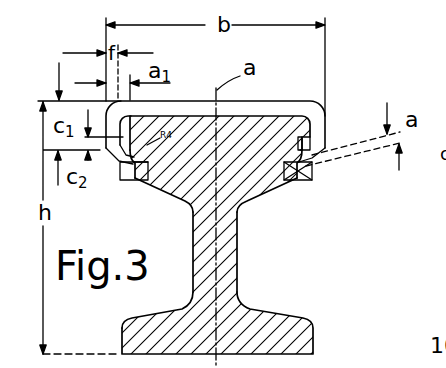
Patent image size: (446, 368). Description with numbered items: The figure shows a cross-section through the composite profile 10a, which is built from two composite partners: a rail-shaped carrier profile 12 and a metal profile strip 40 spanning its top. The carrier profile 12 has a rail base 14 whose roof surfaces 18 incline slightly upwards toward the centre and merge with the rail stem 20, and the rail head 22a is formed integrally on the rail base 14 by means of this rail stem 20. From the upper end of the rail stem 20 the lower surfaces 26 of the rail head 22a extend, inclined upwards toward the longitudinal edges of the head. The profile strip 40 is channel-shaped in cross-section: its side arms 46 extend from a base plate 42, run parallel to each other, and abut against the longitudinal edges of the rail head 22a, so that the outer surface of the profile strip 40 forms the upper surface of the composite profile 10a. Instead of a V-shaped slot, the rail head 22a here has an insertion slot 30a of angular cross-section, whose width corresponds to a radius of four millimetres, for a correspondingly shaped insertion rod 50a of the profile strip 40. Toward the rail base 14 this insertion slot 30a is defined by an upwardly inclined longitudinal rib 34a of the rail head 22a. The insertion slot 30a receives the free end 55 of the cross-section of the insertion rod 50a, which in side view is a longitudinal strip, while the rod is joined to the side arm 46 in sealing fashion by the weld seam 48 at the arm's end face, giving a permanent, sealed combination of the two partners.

The composite profile 10a is at (257, 130).
The rail-shaped carrier profile 12 is at (223, 235).
The rail base 14 is at (303, 335).
The roof surfaces 18 is at (162, 313).
The rail stem 20 is at (238, 262).
The rail head 22a is at (244, 180).
The lower surfaces of the rail head 26 is at (172, 194).
The insertion slot 30a is at (285, 165).
The longitudinal rib 34a is at (313, 172).
The profile strip 40 is at (285, 99).
The base plate 42 is at (190, 109).
The side arms 46 is at (312, 132).
The weld seam 48 is at (110, 165).
The insertion rod 50a is at (314, 147).
The free end 55 is at (143, 168).